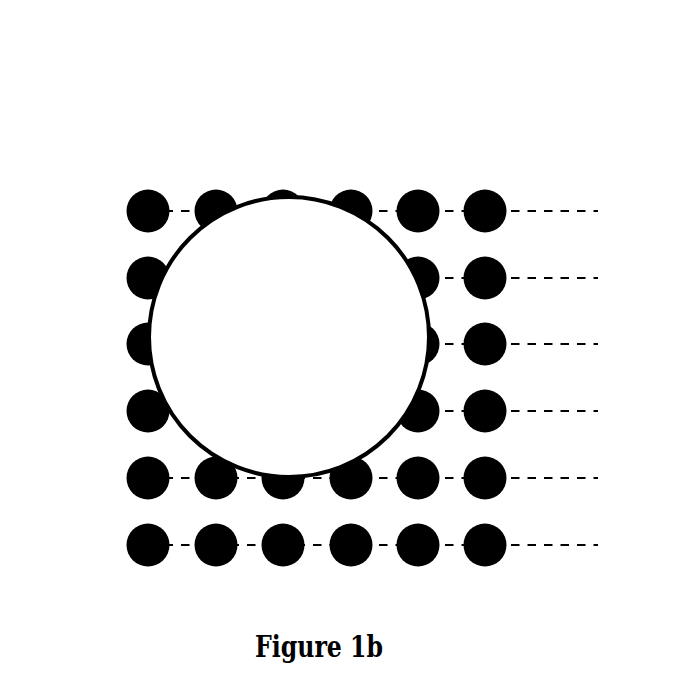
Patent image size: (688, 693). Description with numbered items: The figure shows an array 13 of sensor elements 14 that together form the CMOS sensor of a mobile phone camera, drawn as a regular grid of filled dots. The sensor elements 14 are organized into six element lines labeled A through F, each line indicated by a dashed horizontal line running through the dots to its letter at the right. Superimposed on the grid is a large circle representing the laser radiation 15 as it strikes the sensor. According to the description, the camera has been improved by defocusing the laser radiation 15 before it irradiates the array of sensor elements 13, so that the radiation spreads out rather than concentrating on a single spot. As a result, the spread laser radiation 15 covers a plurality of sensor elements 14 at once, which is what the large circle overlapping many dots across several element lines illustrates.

The array of sensor elements 13 is at (318, 312).
The sensor element 14 is at (140, 503).
The laser radiation 15 is at (280, 222).